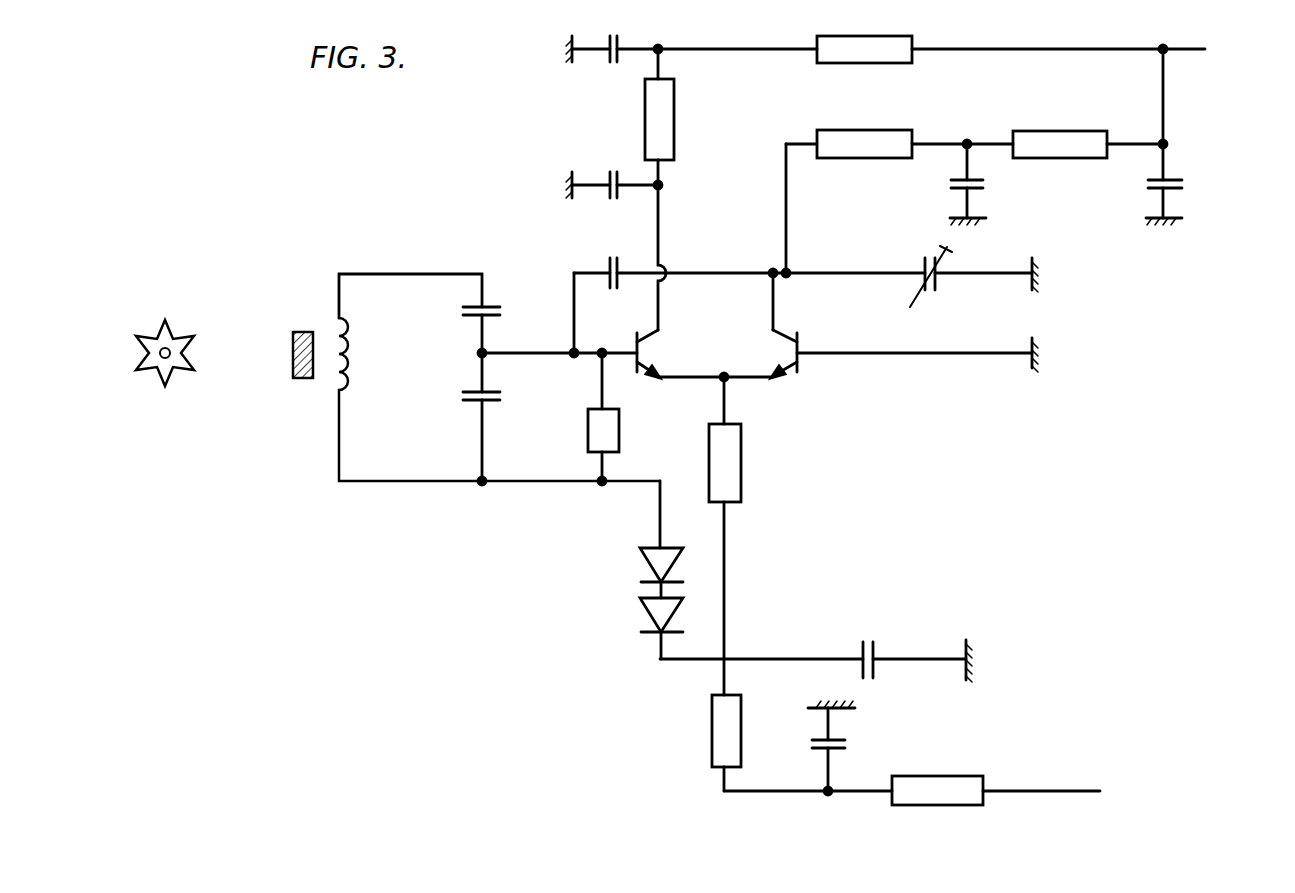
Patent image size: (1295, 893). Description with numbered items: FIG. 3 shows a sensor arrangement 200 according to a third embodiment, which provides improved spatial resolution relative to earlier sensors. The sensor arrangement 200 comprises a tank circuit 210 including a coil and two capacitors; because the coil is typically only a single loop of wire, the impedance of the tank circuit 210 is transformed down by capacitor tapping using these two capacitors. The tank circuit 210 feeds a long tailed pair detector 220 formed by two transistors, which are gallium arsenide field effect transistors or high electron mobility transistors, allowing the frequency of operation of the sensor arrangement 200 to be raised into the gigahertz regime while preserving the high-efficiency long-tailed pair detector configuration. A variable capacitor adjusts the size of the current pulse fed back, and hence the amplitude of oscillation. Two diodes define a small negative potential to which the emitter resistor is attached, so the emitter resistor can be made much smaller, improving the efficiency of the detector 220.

The sensor arrangement 200 is at (340, 112).
The tank circuit 210 is at (547, 507).
The long tailed pair detector 220 is at (784, 800).